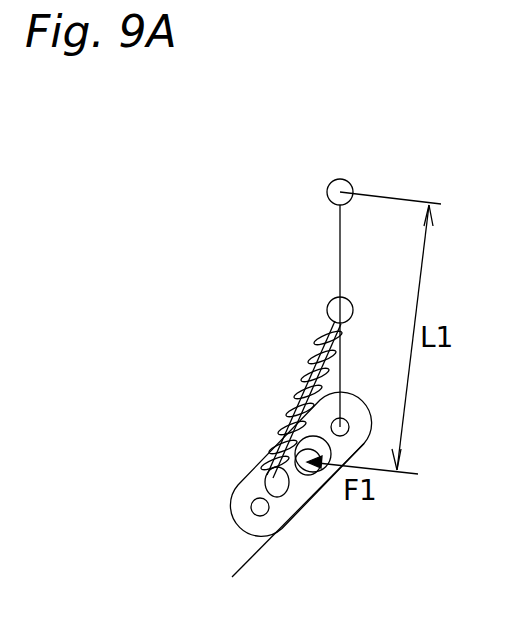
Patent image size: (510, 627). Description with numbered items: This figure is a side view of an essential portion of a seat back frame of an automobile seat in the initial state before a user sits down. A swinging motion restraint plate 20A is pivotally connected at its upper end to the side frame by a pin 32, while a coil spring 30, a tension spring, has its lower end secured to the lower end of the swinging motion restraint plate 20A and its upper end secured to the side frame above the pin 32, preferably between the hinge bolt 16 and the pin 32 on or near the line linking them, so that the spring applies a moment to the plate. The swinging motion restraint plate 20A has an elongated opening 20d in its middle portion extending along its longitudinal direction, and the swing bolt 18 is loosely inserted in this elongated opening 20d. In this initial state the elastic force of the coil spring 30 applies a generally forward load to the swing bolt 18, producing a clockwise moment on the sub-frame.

The hinge bolt 16 is at (327, 191).
The coil spring 30 is at (298, 408).
The pin 32 is at (345, 420).
The swing bolt 18 is at (307, 474).
The swinging motion restraint plate 20A is at (230, 513).
The elongated opening 20d is at (277, 529).